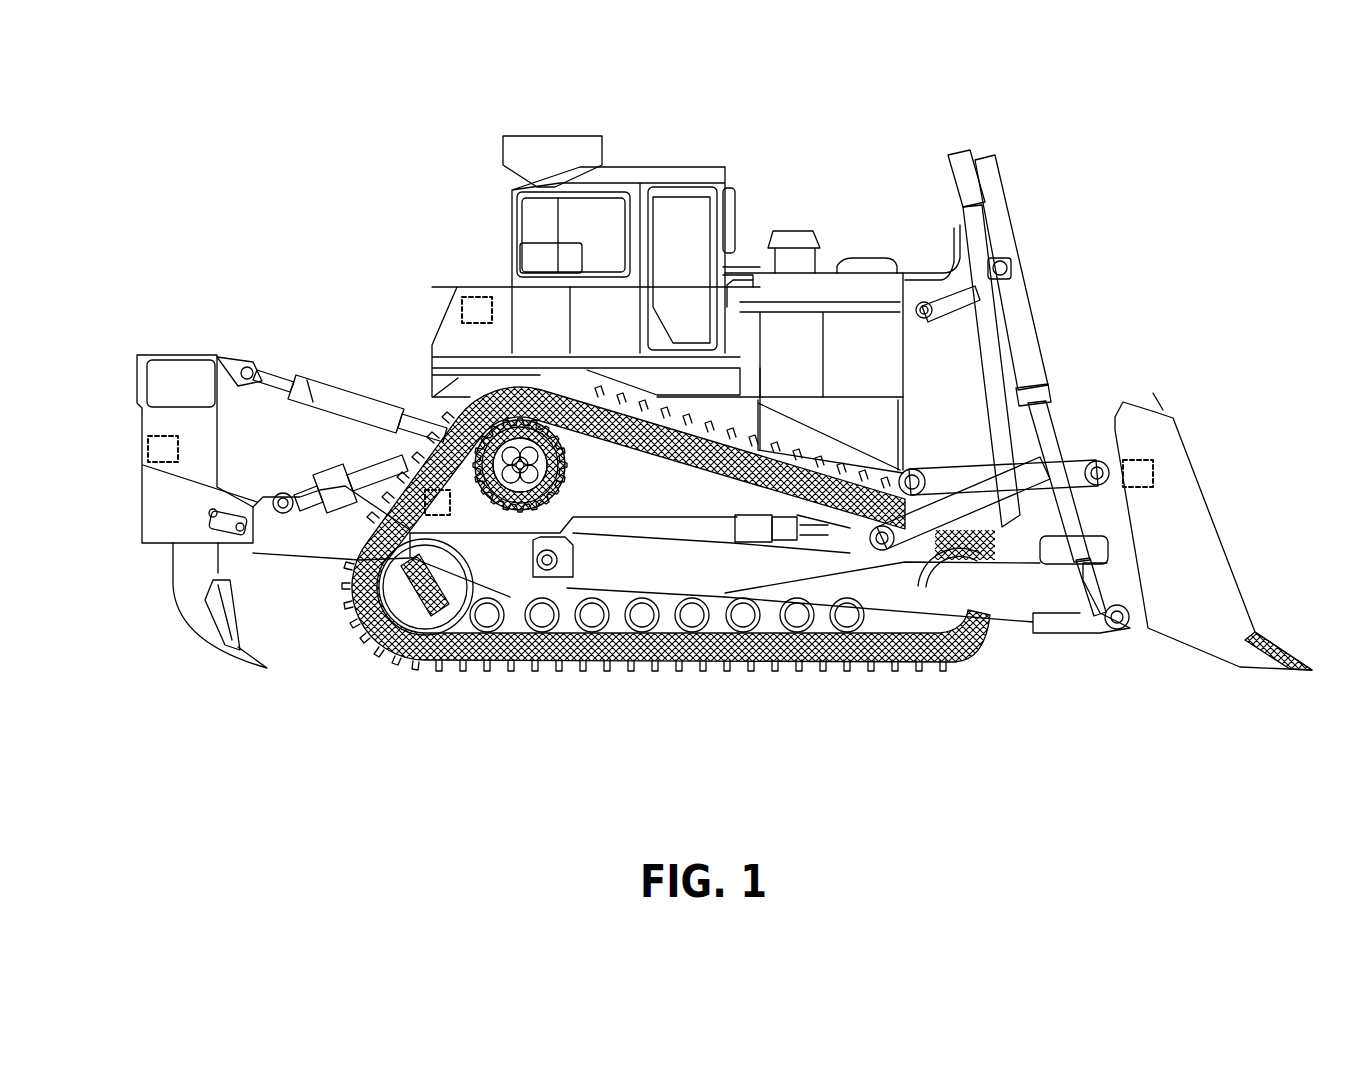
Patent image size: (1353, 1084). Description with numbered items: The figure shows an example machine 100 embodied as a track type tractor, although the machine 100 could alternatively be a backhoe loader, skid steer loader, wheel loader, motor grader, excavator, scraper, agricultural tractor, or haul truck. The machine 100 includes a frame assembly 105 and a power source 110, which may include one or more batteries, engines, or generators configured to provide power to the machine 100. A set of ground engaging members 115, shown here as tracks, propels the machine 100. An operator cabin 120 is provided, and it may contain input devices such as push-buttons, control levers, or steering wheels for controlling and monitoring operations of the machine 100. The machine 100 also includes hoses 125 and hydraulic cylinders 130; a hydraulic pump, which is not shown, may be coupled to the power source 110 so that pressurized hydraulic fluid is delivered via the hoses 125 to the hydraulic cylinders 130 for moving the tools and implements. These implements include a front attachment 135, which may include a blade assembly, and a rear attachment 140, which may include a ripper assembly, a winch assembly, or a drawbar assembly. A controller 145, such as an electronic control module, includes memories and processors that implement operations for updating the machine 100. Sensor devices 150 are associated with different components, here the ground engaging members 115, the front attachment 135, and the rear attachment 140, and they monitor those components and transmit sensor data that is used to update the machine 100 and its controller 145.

The machine 100 is at (1212, 150).
The frame assembly 105 is at (440, 380).
The power source 110 is at (833, 282).
The ground engaging members 115 is at (422, 663).
The operator cabin 120 is at (650, 160).
The hoses 125 is at (958, 263).
The hydraulic cylinders 130 is at (343, 380).
The front attachment 135 is at (1243, 487).
The rear attachment 140 is at (212, 337).
The controller 145 is at (480, 315).
The sensor devices 150 is at (168, 445).